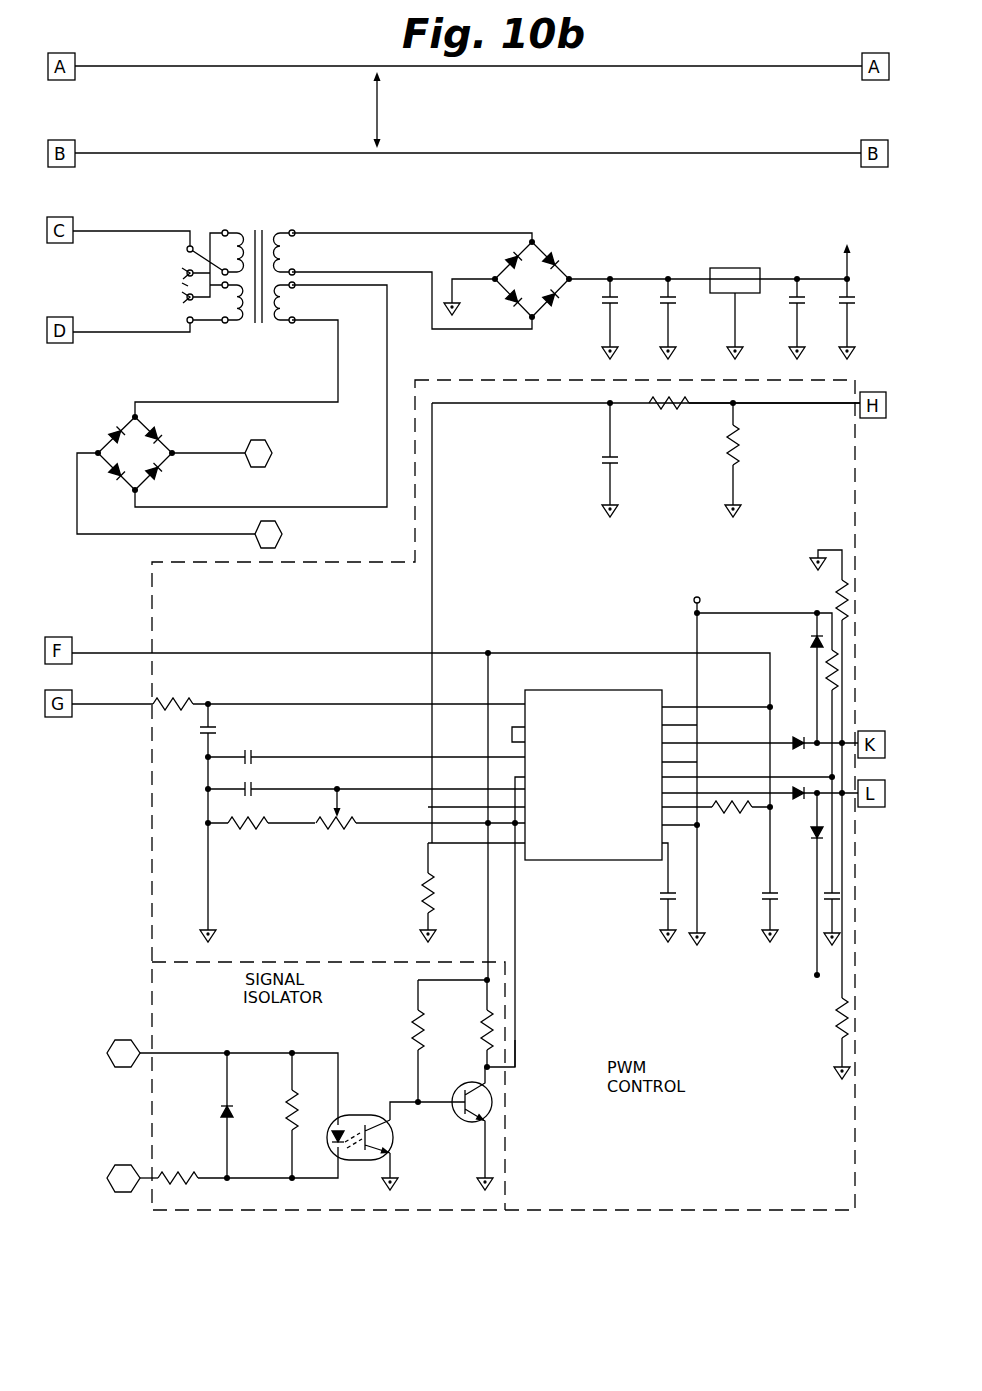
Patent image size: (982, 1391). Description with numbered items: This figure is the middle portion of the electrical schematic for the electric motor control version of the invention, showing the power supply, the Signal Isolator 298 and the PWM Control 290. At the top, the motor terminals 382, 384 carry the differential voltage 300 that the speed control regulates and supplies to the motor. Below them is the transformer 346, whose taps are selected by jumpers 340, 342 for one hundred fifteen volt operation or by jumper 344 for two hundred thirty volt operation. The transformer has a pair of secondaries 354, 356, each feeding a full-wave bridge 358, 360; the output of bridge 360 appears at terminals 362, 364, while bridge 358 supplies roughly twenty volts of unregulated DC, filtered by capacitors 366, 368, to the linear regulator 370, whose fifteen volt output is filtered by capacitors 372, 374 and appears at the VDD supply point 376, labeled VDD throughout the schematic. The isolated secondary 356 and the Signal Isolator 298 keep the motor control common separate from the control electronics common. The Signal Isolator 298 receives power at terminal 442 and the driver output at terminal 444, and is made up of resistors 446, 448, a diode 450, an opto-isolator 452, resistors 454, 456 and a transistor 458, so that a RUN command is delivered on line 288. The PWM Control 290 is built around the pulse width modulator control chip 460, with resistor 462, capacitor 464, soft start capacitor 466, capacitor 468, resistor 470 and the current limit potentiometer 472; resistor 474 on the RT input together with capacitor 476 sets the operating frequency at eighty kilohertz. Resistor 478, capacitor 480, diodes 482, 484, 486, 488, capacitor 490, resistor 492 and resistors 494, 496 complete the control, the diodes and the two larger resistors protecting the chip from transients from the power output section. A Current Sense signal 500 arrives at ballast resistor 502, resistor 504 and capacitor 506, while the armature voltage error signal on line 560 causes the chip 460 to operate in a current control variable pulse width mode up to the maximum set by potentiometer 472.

The differential voltage 300 is at (378, 112).
The terminal 382 is at (244, 67).
The terminal 384 is at (210, 152).
The jumper 340 is at (180, 272).
The jumper 342 is at (180, 297).
The jumper 344 is at (184, 284).
The transformer 346 is at (252, 333).
The secondary 354 is at (295, 256).
The isolated secondary 356 is at (295, 300).
The full-wave bridge 358 is at (552, 249).
The full-wave bridge 360 is at (154, 420).
The terminal 362 is at (272, 452).
The terminal 364 is at (282, 534).
The capacitor 366 is at (606, 312).
The capacitor 368 is at (666, 310).
The linear regulator 370 is at (735, 268).
The capacitor 372 is at (794, 312).
The capacitor 374 is at (846, 310).
The supply voltage VDD 376 is at (843, 268).
The Current Sense signal 500 is at (810, 406).
The ballast resistor 502 is at (740, 462).
The resistor 504 is at (681, 410).
The capacitor 506 is at (615, 466).
The resistor 494 is at (838, 582).
The resistor 496 is at (840, 1010).
The resistor 492 is at (828, 667).
The capacitor 490 is at (822, 906).
The diode 486 is at (808, 642).
The diode 488 is at (812, 835).
The diode 482 is at (812, 724).
The diode 484 is at (800, 796).
The resistor 478 is at (742, 814).
The capacitor 480 is at (769, 899).
The capacitor 476 is at (665, 900).
The pulse width modulator control chip 460 is at (573, 861).
The line 560 is at (130, 706).
The resistor 462 is at (193, 700).
The capacitor 464 is at (213, 722).
The soft start capacitor 466 is at (253, 755).
The capacitor 468 is at (253, 787).
The resistor 470 is at (263, 830).
The potentiometer 472 is at (340, 830).
The resistor 474 is at (424, 895).
The terminal 442 is at (124, 1040).
The terminal 444 is at (123, 1165).
The resistor 446 is at (198, 1172).
The resistor 448 is at (290, 1095).
The diode 450 is at (222, 1108).
The opto-isolator 452 is at (391, 1072).
The resistor 454 is at (415, 1020).
The resistor 456 is at (486, 1014).
The transistor 458 is at (468, 1123).
The Signal Isolator 298 is at (262, 1043).
The line 288 is at (516, 1040).
The PWM Control 290 is at (645, 1158).